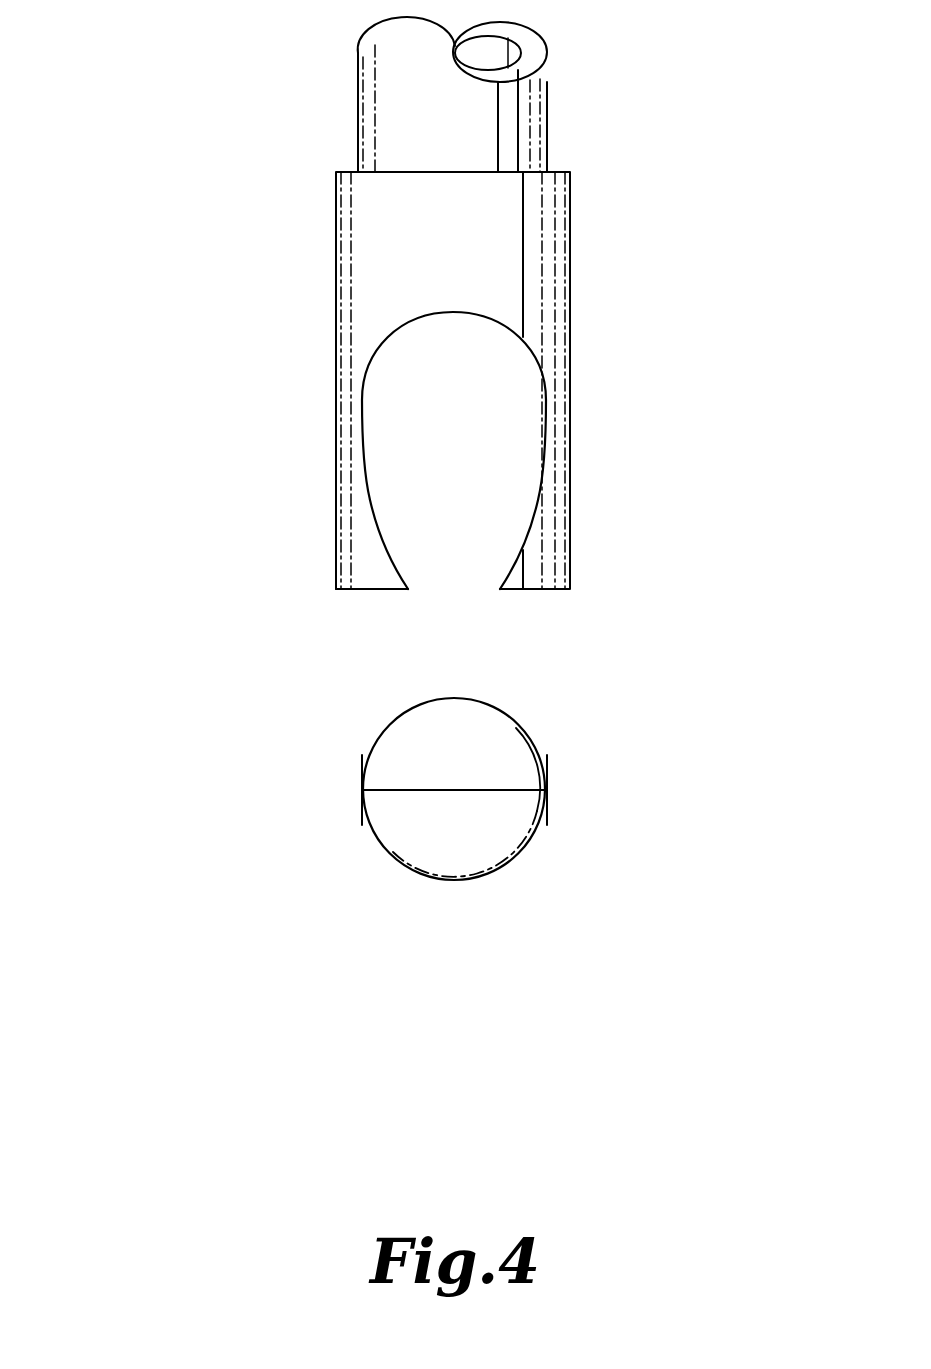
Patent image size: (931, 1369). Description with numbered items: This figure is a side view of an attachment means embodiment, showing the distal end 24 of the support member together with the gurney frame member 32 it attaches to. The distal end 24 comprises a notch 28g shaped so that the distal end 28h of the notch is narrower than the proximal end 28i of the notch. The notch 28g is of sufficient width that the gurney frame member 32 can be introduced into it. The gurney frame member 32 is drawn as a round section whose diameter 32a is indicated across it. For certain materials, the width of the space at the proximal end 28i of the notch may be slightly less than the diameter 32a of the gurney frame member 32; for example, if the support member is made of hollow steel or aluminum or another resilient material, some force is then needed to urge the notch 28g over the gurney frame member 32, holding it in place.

The distal end of the support member 24 is at (570, 290).
The proximal end of the notch 28i is at (455, 375).
The notch 28g is at (455, 458).
The distal end of the notch 28h is at (455, 552).
The gurney frame member 32 is at (525, 852).
The diameter of the gurney frame member 32a is at (455, 788).